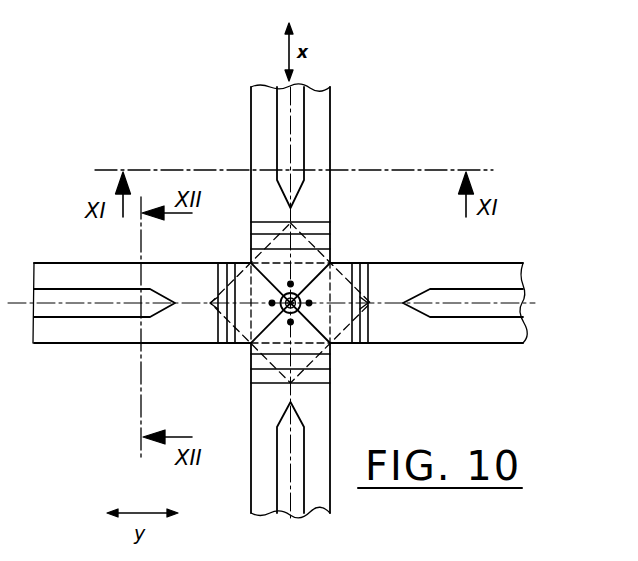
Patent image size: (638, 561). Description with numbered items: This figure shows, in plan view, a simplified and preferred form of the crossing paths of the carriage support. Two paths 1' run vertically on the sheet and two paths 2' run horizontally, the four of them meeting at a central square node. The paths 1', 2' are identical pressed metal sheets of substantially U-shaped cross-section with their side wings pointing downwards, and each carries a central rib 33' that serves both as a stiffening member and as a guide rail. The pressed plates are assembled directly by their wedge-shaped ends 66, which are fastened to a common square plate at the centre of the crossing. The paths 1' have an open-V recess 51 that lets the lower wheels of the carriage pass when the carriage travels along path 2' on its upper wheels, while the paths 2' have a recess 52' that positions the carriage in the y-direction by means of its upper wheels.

The path 1' is at (295, 301).
The path 2' is at (275, 306).
The central rib 33' is at (339, 300).
The open-V recess 51 is at (318, 375).
The recess 52' is at (279, 335).
The wedge-shaped ends 66 is at (303, 273).